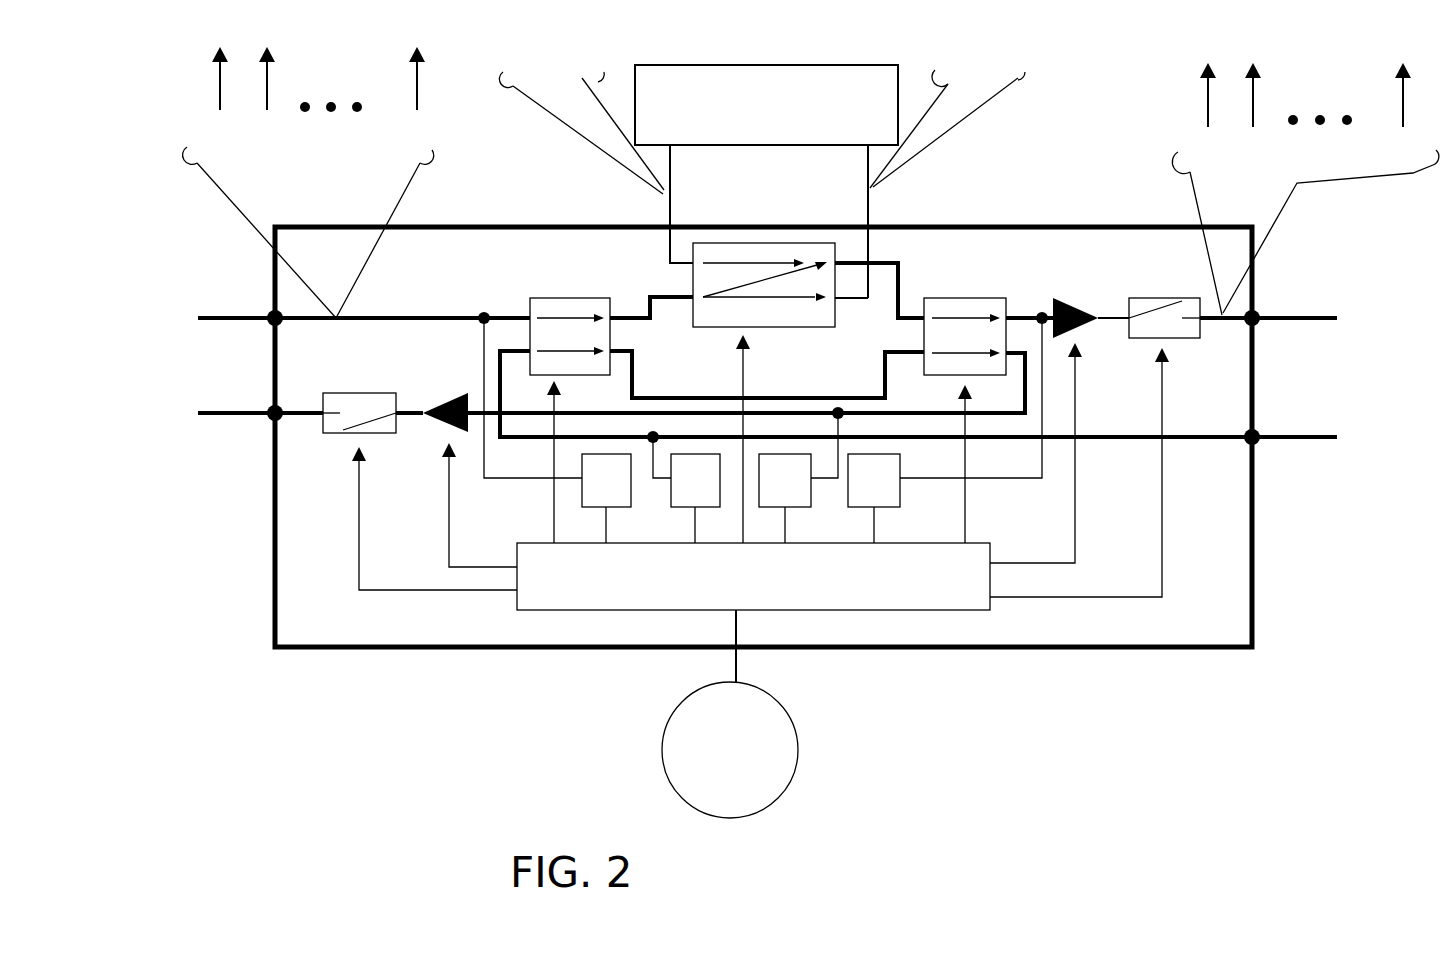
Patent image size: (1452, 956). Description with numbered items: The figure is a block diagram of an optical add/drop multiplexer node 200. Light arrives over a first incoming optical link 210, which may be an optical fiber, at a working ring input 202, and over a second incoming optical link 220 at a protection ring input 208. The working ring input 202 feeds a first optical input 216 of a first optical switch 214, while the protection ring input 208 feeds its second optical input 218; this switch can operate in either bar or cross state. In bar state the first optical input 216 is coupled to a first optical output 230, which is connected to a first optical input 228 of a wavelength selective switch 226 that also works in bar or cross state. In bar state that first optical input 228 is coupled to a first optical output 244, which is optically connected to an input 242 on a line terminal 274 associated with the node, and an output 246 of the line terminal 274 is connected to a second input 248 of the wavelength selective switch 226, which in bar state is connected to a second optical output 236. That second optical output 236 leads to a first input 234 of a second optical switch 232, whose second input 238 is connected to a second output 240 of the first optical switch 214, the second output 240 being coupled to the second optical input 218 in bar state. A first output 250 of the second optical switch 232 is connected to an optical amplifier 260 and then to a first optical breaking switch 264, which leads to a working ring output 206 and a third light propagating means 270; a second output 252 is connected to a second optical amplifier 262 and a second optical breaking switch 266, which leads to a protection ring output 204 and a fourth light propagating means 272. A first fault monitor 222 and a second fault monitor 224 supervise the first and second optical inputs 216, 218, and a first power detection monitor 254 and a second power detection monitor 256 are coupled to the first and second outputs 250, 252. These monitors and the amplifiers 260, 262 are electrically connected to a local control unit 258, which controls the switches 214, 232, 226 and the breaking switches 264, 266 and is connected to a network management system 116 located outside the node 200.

The optical add/drop multiplexer node 200 is at (1086, 692).
The network management system 116 is at (798, 746).
The working ring input 202 is at (270, 315).
The protection ring output 204 is at (270, 410).
The working ring output 206 is at (1257, 313).
The protection ring input 208 is at (1258, 445).
The first incoming optical link 210 is at (215, 317).
The fourth light propagating means 272 is at (220, 410).
The third light propagating means 270 is at (1307, 315).
The second incoming optical link 220 is at (1308, 440).
The first optical switch 214 is at (545, 290).
The first optical input 216 is at (530, 317).
The second optical input 218 is at (527, 350).
The first fault monitor 222 is at (557, 430).
The second fault monitor 224 is at (683, 487).
The wavelength selective switch 226 is at (767, 334).
The first optical input 228 is at (694, 334).
The first optical output 230 is at (620, 288).
The second optical switch 232 is at (977, 290).
The first input 234 is at (910, 300).
The second optical output 236 is at (837, 263).
The second input 238 is at (922, 355).
The second output 240 is at (767, 367).
The input 242 is at (863, 150).
The first optical output 244 is at (839, 302).
The output 246 is at (680, 150).
The second input 248 is at (608, 208).
The first output 250 is at (1009, 318).
The second output 252 is at (1008, 352).
The first power detection monitor 254 is at (945, 430).
The second power detection monitor 256 is at (801, 475).
The local control unit 258 is at (760, 472).
The optical amplifier 260 is at (1068, 302).
The second optical amplifier 262 is at (445, 398).
The first optical breaking switch 264 is at (1155, 298).
The second optical breaking switch 266 is at (372, 393).
The line terminal 274 is at (762, 122).